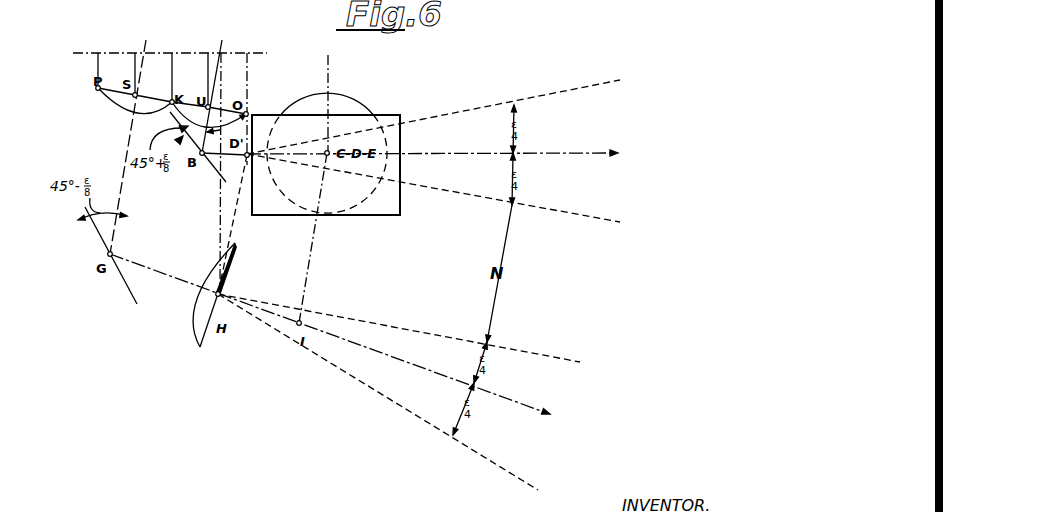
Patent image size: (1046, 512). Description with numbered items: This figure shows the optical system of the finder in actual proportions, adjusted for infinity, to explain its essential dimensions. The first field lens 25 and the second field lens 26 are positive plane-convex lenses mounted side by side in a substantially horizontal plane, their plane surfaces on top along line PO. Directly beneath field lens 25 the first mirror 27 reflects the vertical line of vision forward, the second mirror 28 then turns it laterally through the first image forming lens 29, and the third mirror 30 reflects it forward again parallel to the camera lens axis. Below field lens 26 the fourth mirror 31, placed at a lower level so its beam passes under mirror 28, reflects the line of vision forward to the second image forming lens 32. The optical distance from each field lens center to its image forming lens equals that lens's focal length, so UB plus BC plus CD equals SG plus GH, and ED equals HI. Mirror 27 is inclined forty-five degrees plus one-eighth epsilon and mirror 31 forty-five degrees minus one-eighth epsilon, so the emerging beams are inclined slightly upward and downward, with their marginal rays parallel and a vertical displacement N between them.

The first field lens 25 is at (182, 97).
The second field lens 26 is at (135, 100).
The first mirror 27 is at (214, 177).
The second mirror 28 is at (266, 218).
The first image forming lens 29 is at (344, 96).
The third mirror 30 is at (285, 218).
The fourth mirror 31 is at (123, 284).
The second image forming lens 32 is at (202, 306).